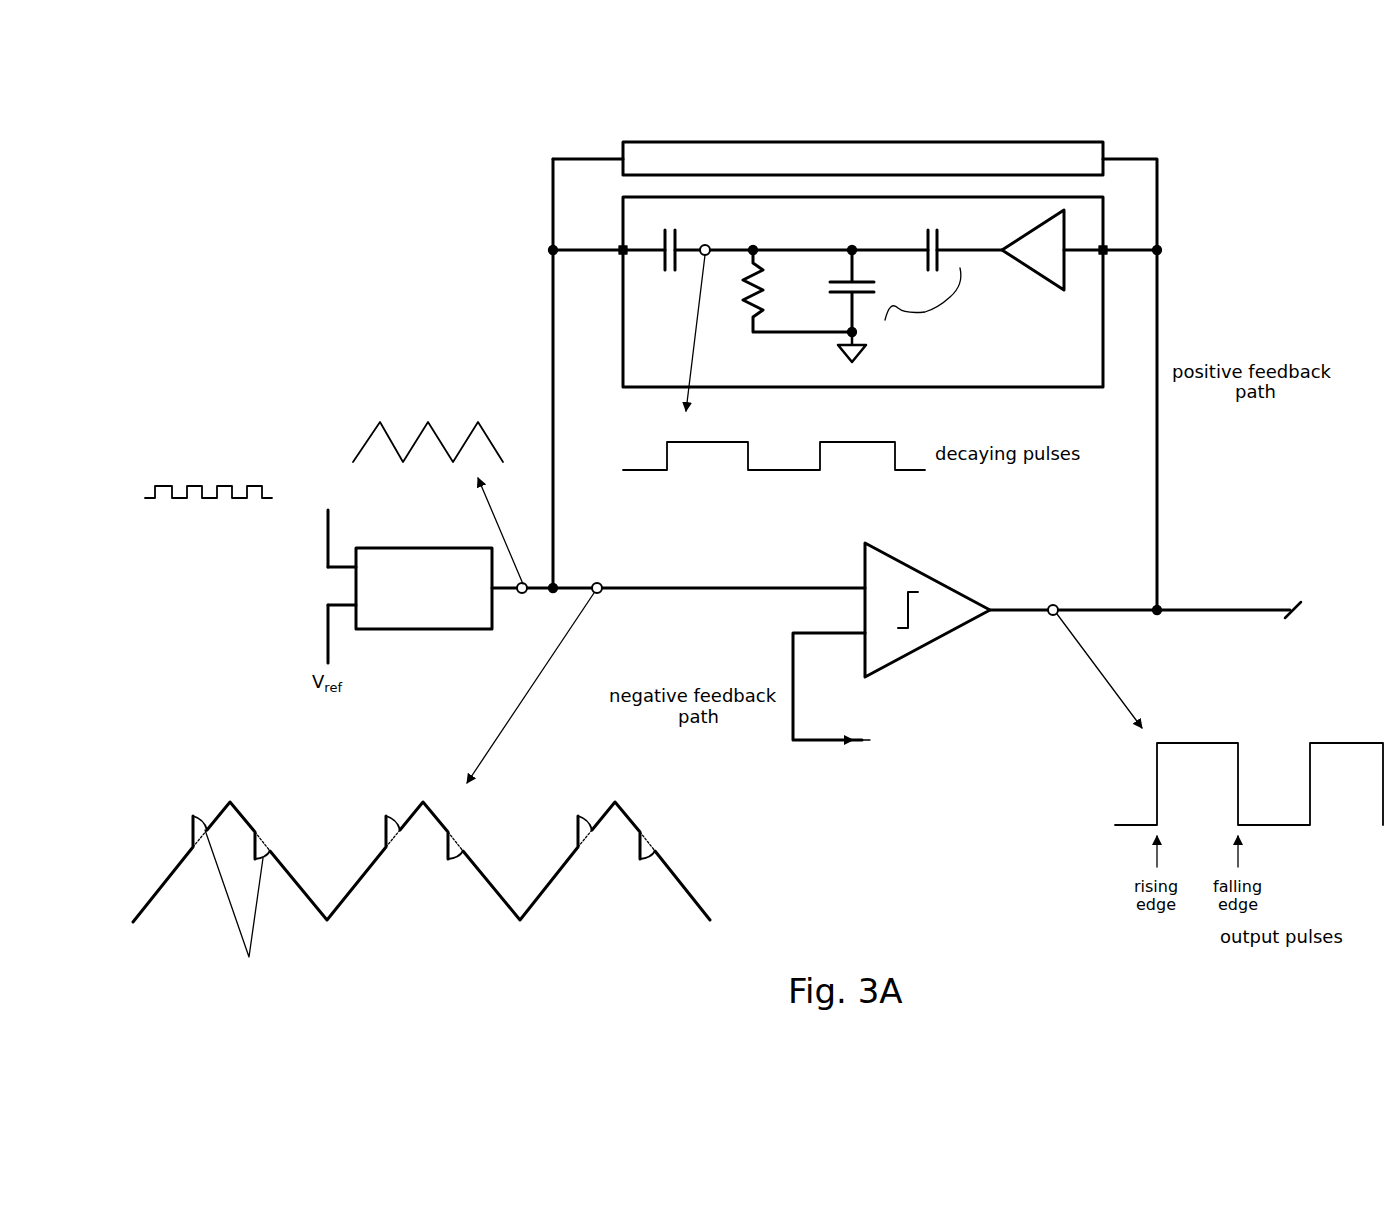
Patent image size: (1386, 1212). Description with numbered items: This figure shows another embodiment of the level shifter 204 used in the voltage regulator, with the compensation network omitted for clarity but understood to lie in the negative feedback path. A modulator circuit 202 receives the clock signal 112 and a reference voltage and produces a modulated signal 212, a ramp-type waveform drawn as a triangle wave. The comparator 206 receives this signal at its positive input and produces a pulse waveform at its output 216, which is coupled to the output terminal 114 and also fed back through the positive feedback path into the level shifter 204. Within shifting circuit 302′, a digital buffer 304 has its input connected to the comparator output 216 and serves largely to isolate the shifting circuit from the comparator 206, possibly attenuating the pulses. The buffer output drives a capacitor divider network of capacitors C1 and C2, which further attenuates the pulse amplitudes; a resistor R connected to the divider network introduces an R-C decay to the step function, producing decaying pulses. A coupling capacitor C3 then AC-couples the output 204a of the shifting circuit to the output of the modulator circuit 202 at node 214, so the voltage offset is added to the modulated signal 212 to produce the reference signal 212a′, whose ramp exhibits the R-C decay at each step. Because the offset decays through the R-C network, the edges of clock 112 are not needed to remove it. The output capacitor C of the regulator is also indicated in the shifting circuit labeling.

The level shifter 204 is at (520, 148).
The output of the shifting circuit 204a is at (553, 292).
The shifting circuit 302′ is at (857, 292).
The digital buffer 304 is at (1040, 285).
The capacitor C1 is at (932, 237).
The capacitor C2 is at (866, 291).
The coupling capacitor C3 is at (670, 237).
The resistor R is at (786, 291).
The output capacitor C is at (923, 303).
The modulator circuit 202 is at (427, 588).
The clock signal 112 is at (258, 524).
The modulated signal 212 is at (355, 440).
The node 214 is at (558, 583).
The comparator 206 is at (862, 568).
The output terminal 114 is at (923, 692).
The output of comparator 216 is at (1155, 614).
The reference signal 212a′ is at (697, 882).